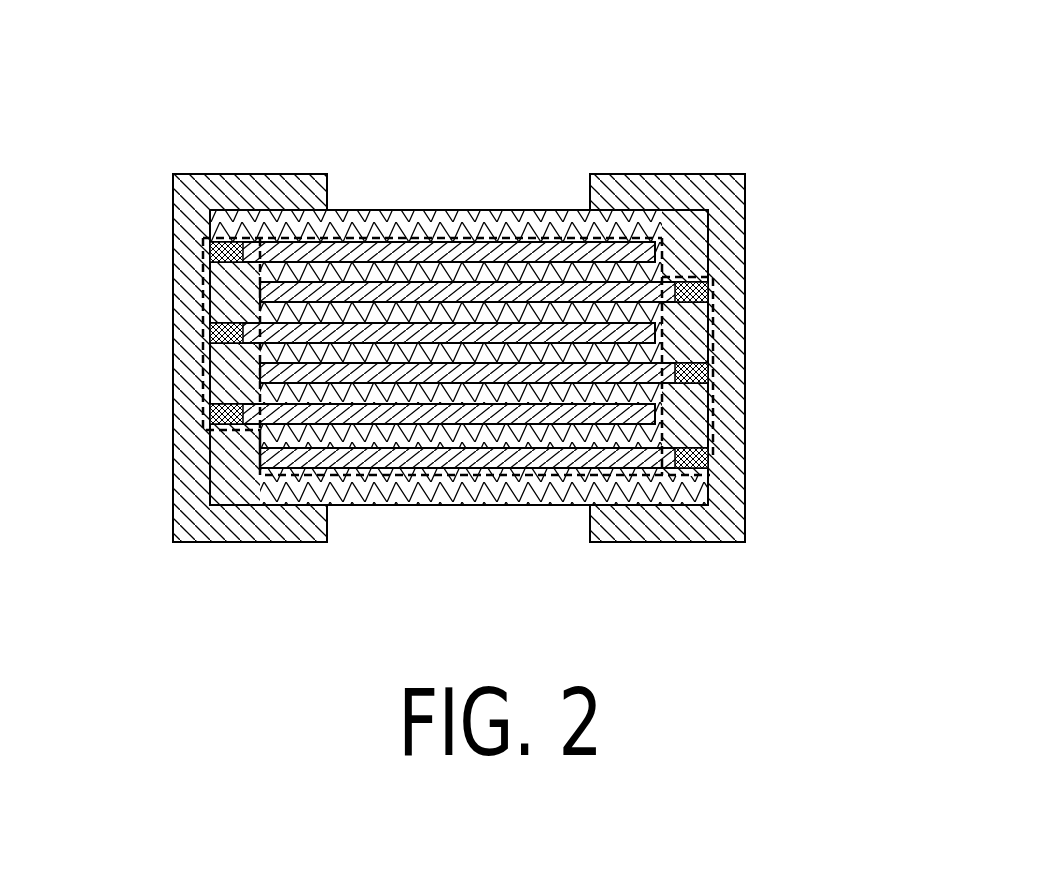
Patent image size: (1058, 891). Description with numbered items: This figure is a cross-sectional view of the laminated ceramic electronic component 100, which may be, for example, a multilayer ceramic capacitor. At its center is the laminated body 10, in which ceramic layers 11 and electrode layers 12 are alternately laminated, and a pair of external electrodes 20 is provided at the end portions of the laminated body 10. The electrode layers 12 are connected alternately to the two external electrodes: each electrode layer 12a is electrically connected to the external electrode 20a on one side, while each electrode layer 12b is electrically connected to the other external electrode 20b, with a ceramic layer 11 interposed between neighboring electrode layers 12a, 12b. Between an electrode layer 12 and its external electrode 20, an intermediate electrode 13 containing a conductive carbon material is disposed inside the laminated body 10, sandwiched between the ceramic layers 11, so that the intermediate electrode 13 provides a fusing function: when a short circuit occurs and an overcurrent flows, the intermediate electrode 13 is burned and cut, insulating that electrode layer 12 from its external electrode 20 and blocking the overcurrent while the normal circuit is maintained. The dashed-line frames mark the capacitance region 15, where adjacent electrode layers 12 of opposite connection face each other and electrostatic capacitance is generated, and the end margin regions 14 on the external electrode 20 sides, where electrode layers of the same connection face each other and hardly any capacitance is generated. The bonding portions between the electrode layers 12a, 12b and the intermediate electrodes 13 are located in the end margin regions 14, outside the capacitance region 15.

The laminated ceramic electronic component 100 is at (500, 333).
The laminated body 10 is at (500, 362).
The ceramic layer 11 is at (430, 435).
The electrode layer 12 is at (459, 291).
The electrode layer 12a is at (394, 249).
The electrode layer 12b is at (582, 462).
The intermediate electrode 13 is at (207, 414).
The end margin region 14 is at (173, 478).
The capacitance region 15 is at (395, 473).
The external electrode 20 is at (502, 323).
The external electrode 20a is at (192, 243).
The external electrode 20b is at (740, 258).